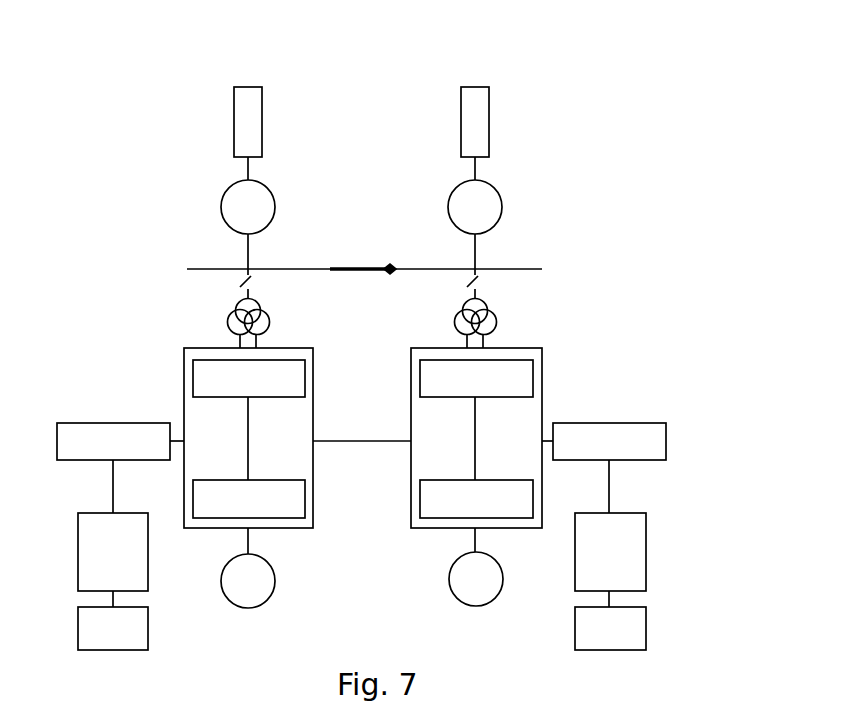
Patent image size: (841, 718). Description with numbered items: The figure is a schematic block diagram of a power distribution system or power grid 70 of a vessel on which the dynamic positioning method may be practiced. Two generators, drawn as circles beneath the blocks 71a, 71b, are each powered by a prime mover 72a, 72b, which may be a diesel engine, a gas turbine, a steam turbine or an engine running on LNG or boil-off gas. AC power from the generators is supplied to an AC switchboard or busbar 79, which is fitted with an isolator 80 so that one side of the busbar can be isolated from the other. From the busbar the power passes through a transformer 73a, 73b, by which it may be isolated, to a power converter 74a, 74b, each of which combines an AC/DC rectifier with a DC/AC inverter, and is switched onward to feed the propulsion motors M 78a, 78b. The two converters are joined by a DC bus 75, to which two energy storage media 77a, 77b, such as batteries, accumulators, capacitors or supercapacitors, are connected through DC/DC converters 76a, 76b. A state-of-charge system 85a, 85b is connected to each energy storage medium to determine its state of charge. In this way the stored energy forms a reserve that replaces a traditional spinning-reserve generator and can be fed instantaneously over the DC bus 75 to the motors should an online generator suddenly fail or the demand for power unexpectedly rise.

The power distribution system 70 is at (364, 368).
The first prime mover / engine 71a is at (217, 122).
The second prime mover / engine 71b is at (510, 122).
The prime mover 72a is at (204, 195).
The prime mover 72b is at (510, 195).
The transformer 73a is at (220, 309).
The transformer 73b is at (515, 310).
The power converter 74a is at (180, 397).
The power converter 74b is at (549, 379).
The DC bus 75 is at (348, 458).
The DC/DC converter 76a is at (99, 429).
The DC/DC converter 76b is at (627, 426).
The energy storage medium 77a is at (88, 552).
The energy storage medium 77b is at (638, 552).
The first motor M 78a is at (231, 576).
The second motor M 78b is at (496, 575).
The AC switchboard or busbar 79 is at (390, 269).
The isolator 80 is at (355, 273).
The SOC system 85a is at (88, 628).
The SOC system 85b is at (638, 628).